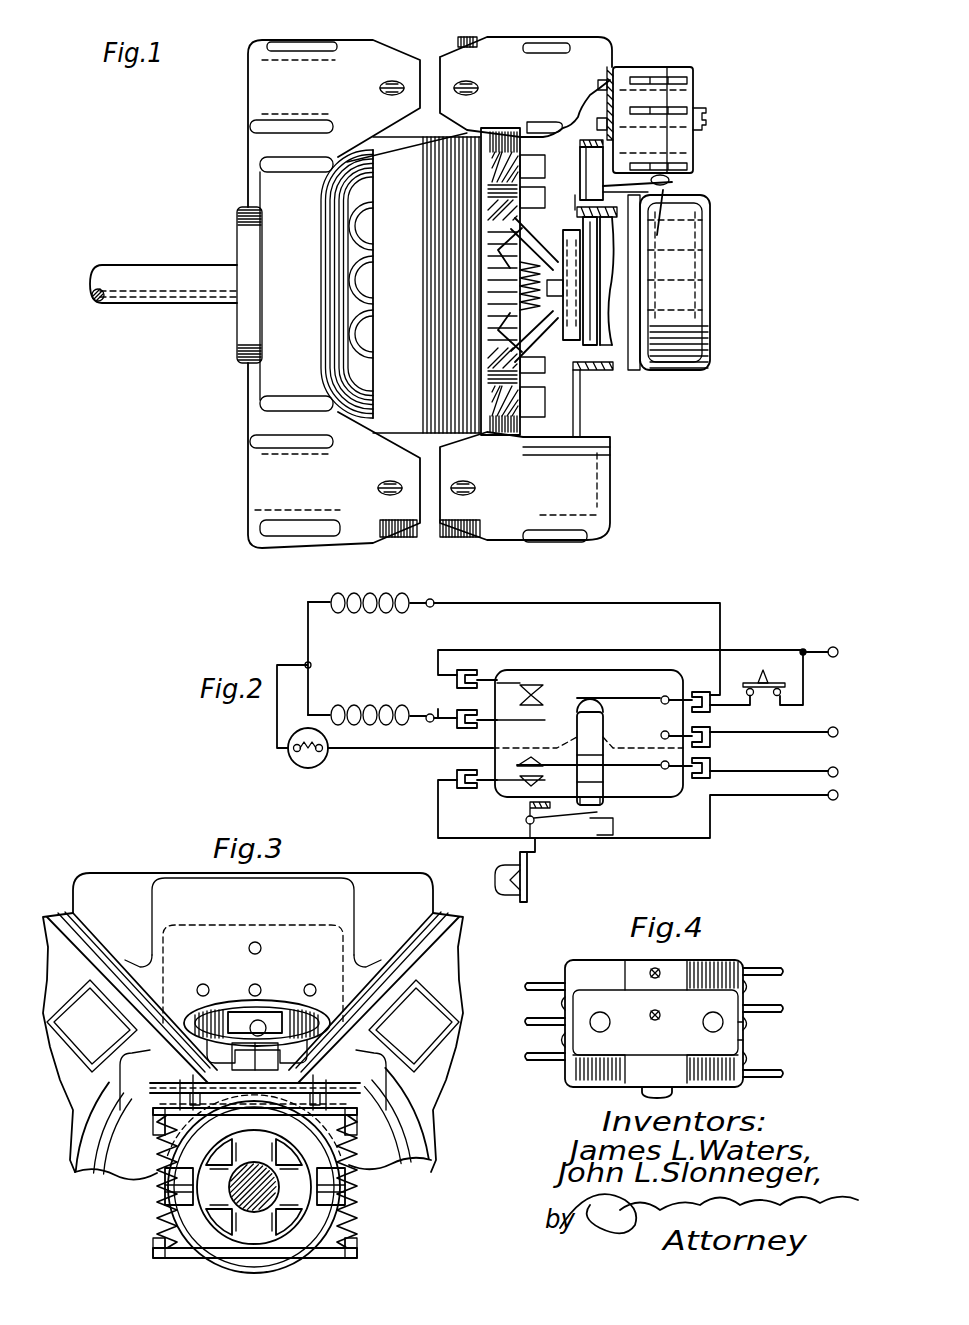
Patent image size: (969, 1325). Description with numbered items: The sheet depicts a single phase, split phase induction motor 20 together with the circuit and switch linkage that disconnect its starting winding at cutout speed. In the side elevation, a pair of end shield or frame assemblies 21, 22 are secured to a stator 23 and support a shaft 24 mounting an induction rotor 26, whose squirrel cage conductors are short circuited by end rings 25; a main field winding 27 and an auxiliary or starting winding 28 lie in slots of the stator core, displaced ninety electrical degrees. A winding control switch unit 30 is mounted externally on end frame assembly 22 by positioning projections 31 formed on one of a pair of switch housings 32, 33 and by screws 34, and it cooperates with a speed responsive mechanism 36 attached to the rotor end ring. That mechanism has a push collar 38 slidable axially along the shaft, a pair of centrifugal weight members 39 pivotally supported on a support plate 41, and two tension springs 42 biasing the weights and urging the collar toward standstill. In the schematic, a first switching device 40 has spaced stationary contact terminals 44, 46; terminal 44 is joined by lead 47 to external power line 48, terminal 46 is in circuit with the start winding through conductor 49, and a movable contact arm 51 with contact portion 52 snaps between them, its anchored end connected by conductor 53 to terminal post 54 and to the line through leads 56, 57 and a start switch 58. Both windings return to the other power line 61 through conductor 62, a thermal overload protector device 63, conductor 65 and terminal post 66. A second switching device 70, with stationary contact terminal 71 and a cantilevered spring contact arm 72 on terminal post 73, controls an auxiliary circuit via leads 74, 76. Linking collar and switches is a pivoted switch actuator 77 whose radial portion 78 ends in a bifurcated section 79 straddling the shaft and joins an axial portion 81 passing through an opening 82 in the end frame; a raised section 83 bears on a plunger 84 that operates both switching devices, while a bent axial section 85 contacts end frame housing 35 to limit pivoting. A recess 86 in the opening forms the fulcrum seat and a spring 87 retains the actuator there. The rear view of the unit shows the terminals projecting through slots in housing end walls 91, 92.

In FIG. 1, the motor 20 is at (510, 563).
In FIG. 1, the end shield or frame assembly 21 is at (262, 483).
In FIG. 1, the end shield or frame assembly 22 is at (593, 483).
In FIG. 3, the end shield or frame assembly 22 is at (140, 888).
In FIG. 1, the stator 23 is at (442, 520).
In FIG. 1, the shaft 24 is at (147, 265).
In FIG. 1, the end rings 25 is at (490, 167).
In FIG. 1, the induction rotor 26 is at (506, 133).
In FIG. 1, the main field winding 27 is at (372, 214).
In FIG. 2, the main field winding 27 is at (380, 612).
In FIG. 1, the auxiliary or starting winding 28 is at (372, 270).
In FIG. 2, the auxiliary or starting winding 28 is at (367, 707).
In FIG. 1, the winding control switch unit 30 is at (672, 60).
In FIG. 2, the winding control switch unit 30 is at (622, 667).
In FIG. 4, the winding control switch unit 30 is at (728, 957).
In FIG. 1, the positioning projections 31 is at (598, 86).
In FIG. 4, the positioning projections 31 is at (651, 1012).
In FIG. 1, the switch housing 32 is at (640, 68).
In FIG. 4, the switch housing 32 is at (592, 962).
In FIG. 1, the switch housing 33 is at (694, 81).
In FIG. 1, the screws 34 is at (708, 115).
In FIG. 1, the end frame housing 35 is at (700, 320).
In FIG. 2, the end frame housing 35 is at (610, 836).
In FIG. 1, the speed responsive mechanism 36 is at (555, 328).
In FIG. 3, the speed responsive mechanism 36 is at (372, 1148).
In FIG. 1, the push collar 38 is at (573, 287).
In FIG. 2, the push collar 38 is at (496, 870).
In FIG. 3, the push collar 38 is at (348, 1228).
In FIG. 1, the centrifugal weight members 39 is at (510, 350).
In FIG. 2, the first switching device 40 is at (615, 704).
In FIG. 1, the support plate 41 is at (540, 236).
In FIG. 3, the support plate 41 is at (240, 1012).
In FIG. 1, the coil or tension springs 42 is at (530, 262).
In FIG. 3, the coil or tension springs 42 is at (357, 1167).
In FIG. 2, the stationary contact terminal 44 is at (480, 676).
In FIG. 4, the stationary contact terminal 44 is at (783, 971).
In FIG. 2, the stationary contact terminal 46 is at (483, 710).
In FIG. 4, the stationary contact terminal 46 is at (783, 1008).
In FIG. 2, the lead 47 is at (562, 649).
In FIG. 2, the external power line 48 is at (817, 649).
In FIG. 2, the conductor 49 is at (438, 709).
In FIG. 2, the movable contact arm 51 is at (625, 698).
In FIG. 2, the movable contact portion 52 is at (543, 690).
In FIG. 2, the conductor 53 is at (644, 604).
In FIG. 2, the terminal post 54 is at (698, 692).
In FIG. 4, the terminal post 54 is at (527, 985).
In FIG. 2, the lead 56 is at (805, 690).
In FIG. 2, the lead 57 is at (730, 707).
In FIG. 2, the start switch 58 is at (764, 672).
In FIG. 2, the external power line 61 is at (814, 730).
In FIG. 2, the conductor 62 is at (277, 710).
In FIG. 2, the thermal overload protector device 63 is at (292, 761).
In FIG. 2, the conductor 65 is at (382, 750).
In FIG. 2, the terminal post 66 is at (667, 731).
In FIG. 4, the terminal post 66 is at (530, 1020).
In FIG. 2, the second switching device 70 is at (614, 769).
In FIG. 2, the stationary contact terminal 71 is at (478, 790).
In FIG. 4, the stationary contact terminal 71 is at (783, 1073).
In FIG. 2, the flexible spring contact blade or arm 72 is at (568, 766).
In FIG. 2, the terminal post 73 is at (686, 778).
In FIG. 4, the terminal post 73 is at (530, 1055).
In FIG. 2, the lead 74 is at (664, 836).
In FIG. 2, the lead 76 is at (757, 769).
In FIG. 2, the pivoted switch actuator 77 is at (537, 823).
In FIG. 1, the radial portion 78 is at (597, 250).
In FIG. 3, the radial portion 78 is at (195, 1083).
In FIG. 1, the bifurcated section 79 is at (582, 317).
In FIG. 2, the bifurcated section 79 is at (528, 878).
In FIG. 3, the bifurcated section 79 is at (345, 1188).
In FIG. 1, the axial portion 81 is at (672, 187).
In FIG. 1, the opening 82 is at (580, 177).
In FIG. 3, the opening 82 is at (222, 992).
In FIG. 1, the raised section 83 is at (660, 192).
In FIG. 3, the raised section 83 is at (262, 1043).
In FIG. 1, the plunger 84 is at (669, 182).
In FIG. 2, the plunger 84 is at (604, 800).
In FIG. 4, the plunger 84 is at (672, 1093).
In FIG. 1, the axial section 85 is at (648, 198).
In FIG. 3, the recess 86 is at (298, 1012).
In FIG. 1, the spring 87 is at (582, 152).
In FIG. 2, the spring 87 is at (534, 806).
In FIG. 3, the spring 87 is at (262, 1019).
In FIG. 4, the housing end wall 91 is at (745, 1031).
In FIG. 4, the housing end wall 92 is at (566, 968).